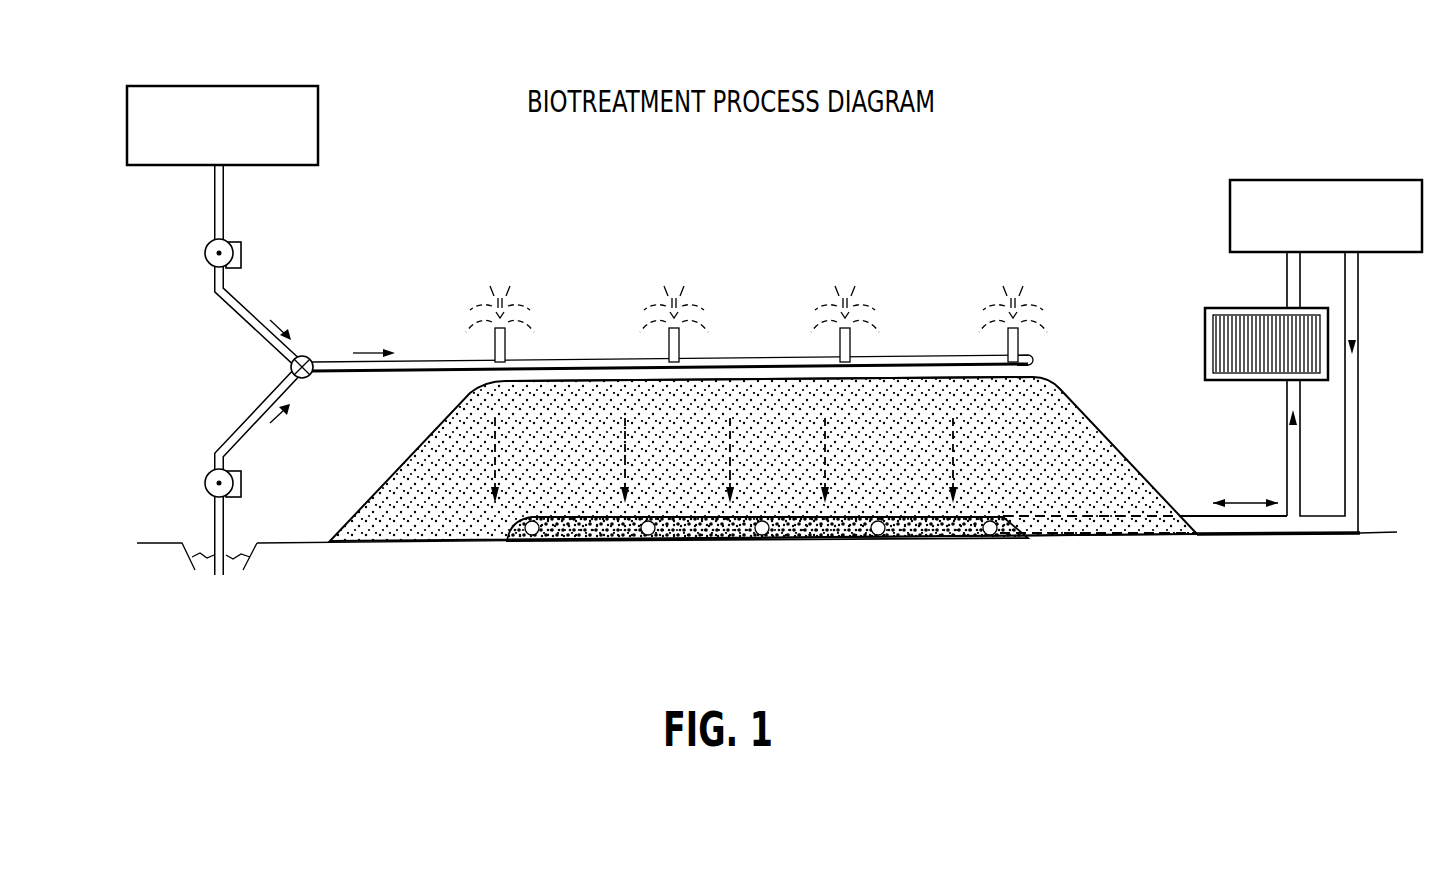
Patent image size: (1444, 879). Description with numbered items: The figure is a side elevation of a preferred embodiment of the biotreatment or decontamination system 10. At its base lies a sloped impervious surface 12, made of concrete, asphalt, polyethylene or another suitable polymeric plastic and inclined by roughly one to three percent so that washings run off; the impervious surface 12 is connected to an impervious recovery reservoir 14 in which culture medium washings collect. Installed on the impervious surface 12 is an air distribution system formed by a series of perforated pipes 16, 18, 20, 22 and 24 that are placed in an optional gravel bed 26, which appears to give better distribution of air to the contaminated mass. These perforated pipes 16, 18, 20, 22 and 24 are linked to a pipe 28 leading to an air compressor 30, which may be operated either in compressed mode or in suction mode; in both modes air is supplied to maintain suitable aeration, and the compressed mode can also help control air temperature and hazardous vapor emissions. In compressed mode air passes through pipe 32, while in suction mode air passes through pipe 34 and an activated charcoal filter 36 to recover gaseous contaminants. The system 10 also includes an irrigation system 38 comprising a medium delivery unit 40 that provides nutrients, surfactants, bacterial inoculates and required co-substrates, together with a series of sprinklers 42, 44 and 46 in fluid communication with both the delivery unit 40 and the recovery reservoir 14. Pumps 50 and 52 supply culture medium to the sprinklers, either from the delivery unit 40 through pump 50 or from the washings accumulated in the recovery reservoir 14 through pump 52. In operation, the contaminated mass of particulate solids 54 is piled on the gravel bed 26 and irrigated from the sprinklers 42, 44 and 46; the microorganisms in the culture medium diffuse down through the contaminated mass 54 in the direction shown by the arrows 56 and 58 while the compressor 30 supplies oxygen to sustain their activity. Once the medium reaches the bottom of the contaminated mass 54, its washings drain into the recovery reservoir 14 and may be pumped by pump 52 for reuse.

The decontamination system 10 is at (1128, 282).
The sloped impervious surface 12 is at (1071, 515).
The impervious recovery reservoir 14 is at (200, 547).
The perforated pipe 16 is at (535, 542).
The perforated pipe 18 is at (635, 542).
The perforated pipe 20 is at (762, 542).
The perforated pipe 22 is at (880, 542).
The perforated pipe 24 is at (1000, 542).
The gravel bed 26 is at (587, 543).
The pipe 28 is at (1140, 515).
The air compressor 30 is at (1355, 180).
The pipe 32 is at (1358, 367).
The pipe 34 is at (1300, 445).
The activated charcoal filter 36 is at (1245, 312).
The irrigation system 38 is at (286, 286).
The medium delivery unit 40 is at (320, 92).
The sprinkler 42 is at (490, 305).
The sprinkler 44 is at (652, 300).
The sprinkler 46 is at (833, 290).
The pump 50 is at (206, 255).
The pump 52 is at (206, 490).
The contaminated mass of particulate solids 54 is at (1035, 405).
The arrow 56 is at (493, 440).
The arrow 58 is at (828, 437).